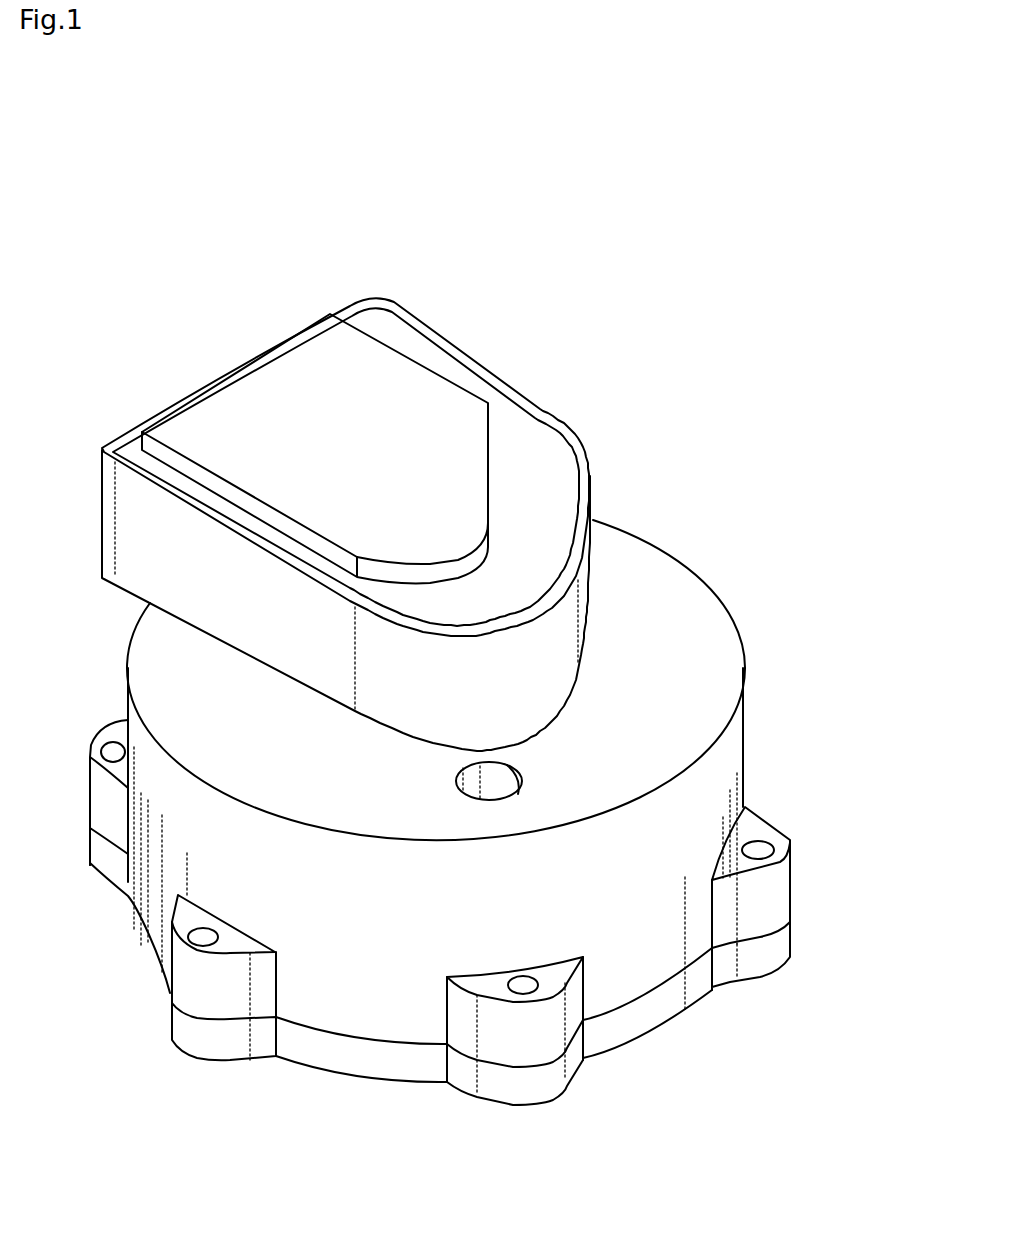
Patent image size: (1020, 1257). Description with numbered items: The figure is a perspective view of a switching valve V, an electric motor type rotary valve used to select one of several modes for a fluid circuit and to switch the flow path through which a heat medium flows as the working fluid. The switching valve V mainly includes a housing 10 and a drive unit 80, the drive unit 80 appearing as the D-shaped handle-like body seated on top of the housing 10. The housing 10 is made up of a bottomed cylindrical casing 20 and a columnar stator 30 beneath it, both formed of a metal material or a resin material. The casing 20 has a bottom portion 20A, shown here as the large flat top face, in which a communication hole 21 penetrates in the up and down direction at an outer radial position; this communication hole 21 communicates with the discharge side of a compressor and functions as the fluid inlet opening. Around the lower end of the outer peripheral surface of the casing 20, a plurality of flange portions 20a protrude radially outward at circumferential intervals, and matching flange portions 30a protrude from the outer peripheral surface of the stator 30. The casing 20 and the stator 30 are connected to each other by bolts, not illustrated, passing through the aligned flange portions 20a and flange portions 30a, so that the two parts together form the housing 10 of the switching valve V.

The switching valve V is at (141, 332).
The drive unit 80 is at (438, 352).
The housing 10 is at (873, 818).
The casing 20 is at (443, 753).
The bottom portion 20A is at (620, 550).
The communication hole 21 is at (522, 790).
The flange portion 20a is at (195, 995).
The stator 30 is at (443, 984).
The flange portion 30a is at (190, 1034).